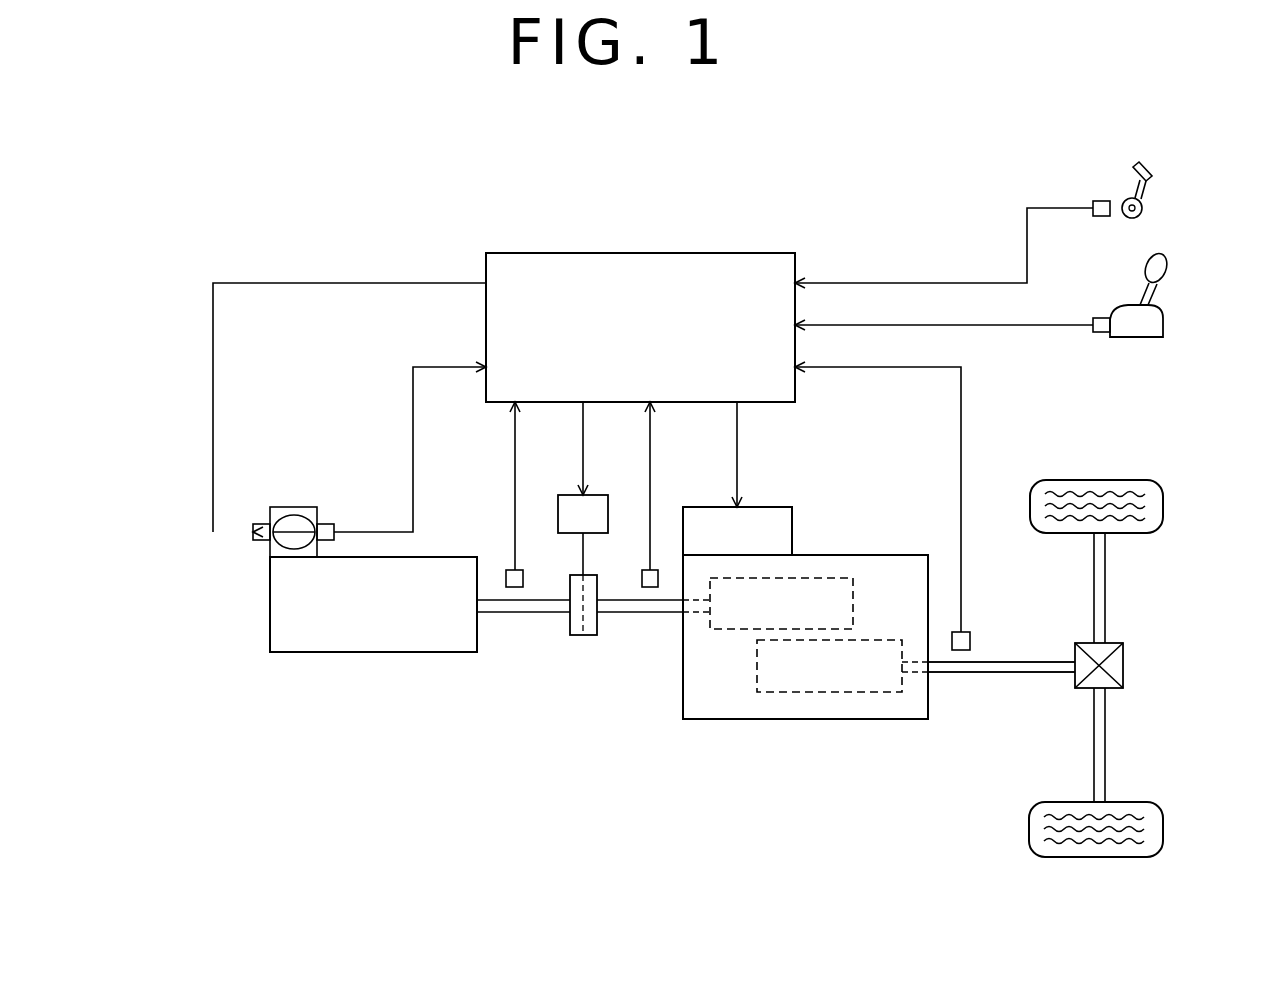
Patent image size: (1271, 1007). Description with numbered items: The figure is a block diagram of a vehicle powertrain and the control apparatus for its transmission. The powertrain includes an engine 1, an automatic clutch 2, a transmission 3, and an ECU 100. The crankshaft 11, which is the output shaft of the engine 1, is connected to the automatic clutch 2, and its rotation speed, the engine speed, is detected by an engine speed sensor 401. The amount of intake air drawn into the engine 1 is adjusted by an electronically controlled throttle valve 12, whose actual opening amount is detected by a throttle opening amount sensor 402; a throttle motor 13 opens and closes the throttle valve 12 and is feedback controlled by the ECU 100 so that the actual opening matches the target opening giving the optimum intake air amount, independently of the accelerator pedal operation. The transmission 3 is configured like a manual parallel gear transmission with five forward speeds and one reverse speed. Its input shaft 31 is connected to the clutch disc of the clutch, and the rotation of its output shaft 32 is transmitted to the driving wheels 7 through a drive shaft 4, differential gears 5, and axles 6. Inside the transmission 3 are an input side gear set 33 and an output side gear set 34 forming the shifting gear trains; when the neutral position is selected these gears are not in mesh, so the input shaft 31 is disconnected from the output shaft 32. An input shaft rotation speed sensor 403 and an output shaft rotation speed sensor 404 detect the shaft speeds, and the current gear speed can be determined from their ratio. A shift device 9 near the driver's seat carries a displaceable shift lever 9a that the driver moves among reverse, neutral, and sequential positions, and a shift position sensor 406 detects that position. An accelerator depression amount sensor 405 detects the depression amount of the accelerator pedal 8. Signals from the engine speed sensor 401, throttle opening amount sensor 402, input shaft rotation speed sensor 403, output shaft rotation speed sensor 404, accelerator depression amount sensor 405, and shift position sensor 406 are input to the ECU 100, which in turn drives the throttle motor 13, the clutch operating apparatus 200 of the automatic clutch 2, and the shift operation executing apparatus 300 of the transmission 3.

The engine 1 is at (332, 653).
The automatic clutch 2 is at (587, 645).
The transmission 3 is at (763, 735).
The drive shaft 4 is at (1045, 660).
The differential gears 5 is at (1123, 664).
The axles 6 is at (1105, 587).
The driving wheels 7 is at (1142, 480).
The accelerator pedal 8 is at (1172, 192).
The shift device 9 is at (1172, 300).
The shift lever 9a is at (1143, 278).
The crankshaft 11 is at (513, 617).
The throttle valve 12 is at (293, 507).
The throttle motor 13 is at (265, 523).
The input shaft 31 is at (650, 615).
The output shaft 32 is at (972, 672).
The input side gear set 33 is at (828, 578).
The output side gear set 34 is at (838, 692).
The ECU 100 is at (668, 253).
The clutch operating apparatus 200 is at (598, 495).
The shift operation executing apparatus 300 is at (770, 507).
The engine speed sensor 401 is at (506, 570).
The throttle opening amount sensor 402 is at (330, 525).
The input shaft rotation speed sensor 403 is at (658, 570).
The output shaft rotation speed sensor 404 is at (970, 640).
The accelerator depression amount sensor 405 is at (1093, 205).
The shift position sensor 406 is at (1100, 332).